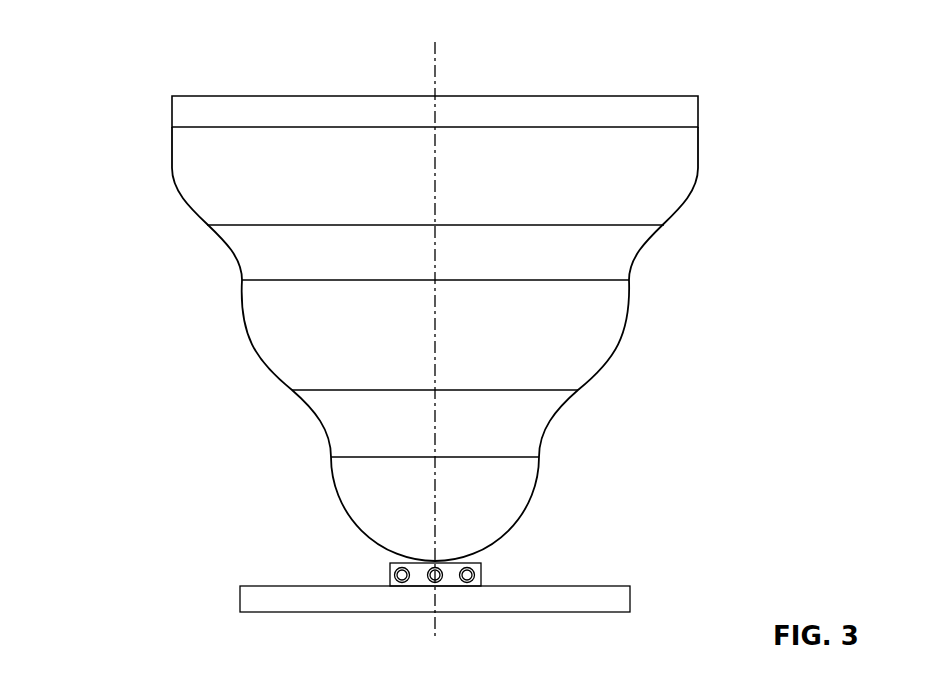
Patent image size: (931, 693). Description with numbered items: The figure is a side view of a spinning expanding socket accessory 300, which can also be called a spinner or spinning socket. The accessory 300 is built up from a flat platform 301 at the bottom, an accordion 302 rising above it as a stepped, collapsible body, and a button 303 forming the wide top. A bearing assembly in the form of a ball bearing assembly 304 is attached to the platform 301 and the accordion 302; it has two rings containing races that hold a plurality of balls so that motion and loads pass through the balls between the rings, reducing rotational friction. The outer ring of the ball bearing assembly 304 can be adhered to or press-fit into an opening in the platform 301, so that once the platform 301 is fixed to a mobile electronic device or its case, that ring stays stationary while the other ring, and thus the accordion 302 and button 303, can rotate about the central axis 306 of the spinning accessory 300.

The spinning expanding socket accessory 300 is at (82, 31).
The platform 301 is at (291, 598).
The accordion 302 is at (596, 341).
The button 303 is at (588, 105).
The ball bearing assembly 304 is at (432, 582).
The axis 306 is at (435, 53).